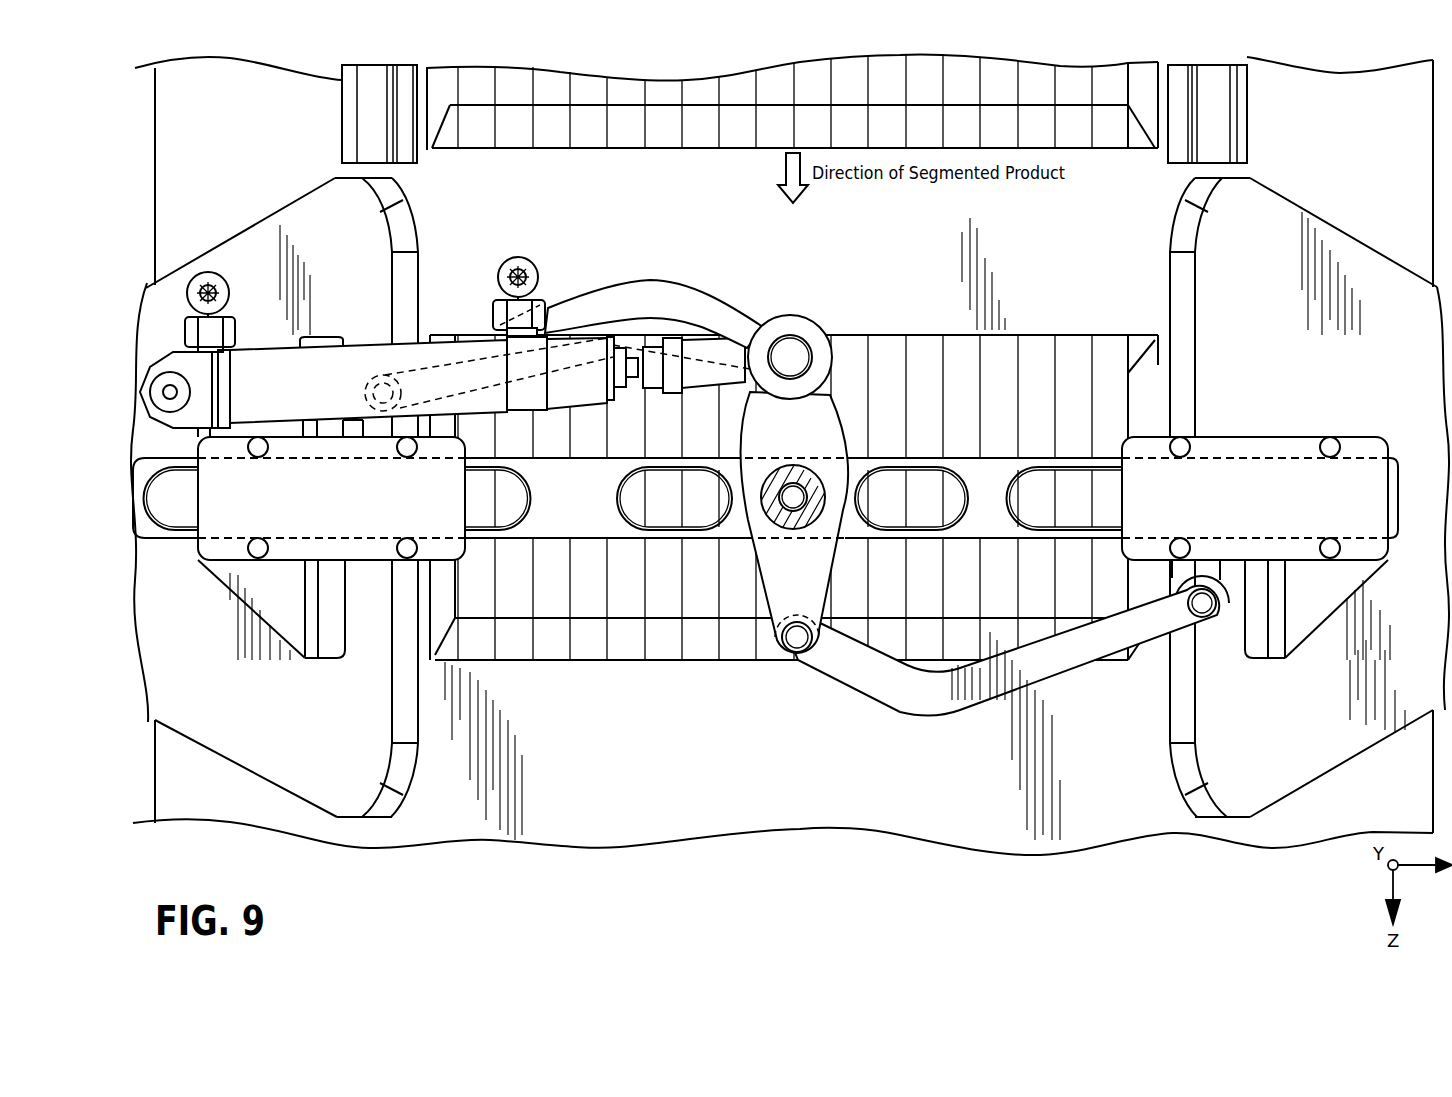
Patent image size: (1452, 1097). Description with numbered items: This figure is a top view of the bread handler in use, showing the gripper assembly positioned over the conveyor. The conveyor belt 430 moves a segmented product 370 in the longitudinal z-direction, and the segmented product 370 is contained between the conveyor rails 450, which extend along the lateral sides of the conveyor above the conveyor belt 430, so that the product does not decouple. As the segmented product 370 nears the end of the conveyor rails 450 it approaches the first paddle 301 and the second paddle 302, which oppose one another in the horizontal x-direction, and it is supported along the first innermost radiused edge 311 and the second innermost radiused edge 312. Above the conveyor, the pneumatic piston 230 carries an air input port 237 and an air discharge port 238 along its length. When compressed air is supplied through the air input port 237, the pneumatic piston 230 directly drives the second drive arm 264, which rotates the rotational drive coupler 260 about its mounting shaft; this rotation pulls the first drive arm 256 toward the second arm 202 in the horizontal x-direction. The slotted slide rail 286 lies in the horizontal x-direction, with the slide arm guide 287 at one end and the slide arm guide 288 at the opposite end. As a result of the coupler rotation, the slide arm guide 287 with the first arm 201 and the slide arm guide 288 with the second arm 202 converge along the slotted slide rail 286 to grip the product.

The conveyor rail 450 is at (357, 100).
The segmented product 370 is at (630, 150).
The second paddle 302 is at (258, 228).
The first paddle 301 is at (1340, 240).
The second innermost radiused edge 312 is at (415, 273).
The first innermost radiused edge 311 is at (1172, 287).
The air input port 237 is at (200, 278).
The air discharge port 238 is at (528, 268).
The pneumatic piston 230 is at (375, 352).
The second drive arm 264 is at (683, 285).
The rotational drive coupler 260 is at (818, 420).
The first drive arm 256 is at (905, 690).
The slotted slide rail 286 is at (625, 540).
The slide arm guide 288 is at (363, 562).
The slide arm guide 287 is at (1212, 437).
The second arm 202 is at (222, 582).
The first arm 201 is at (1357, 437).
The conveyor belt 430 is at (740, 815).